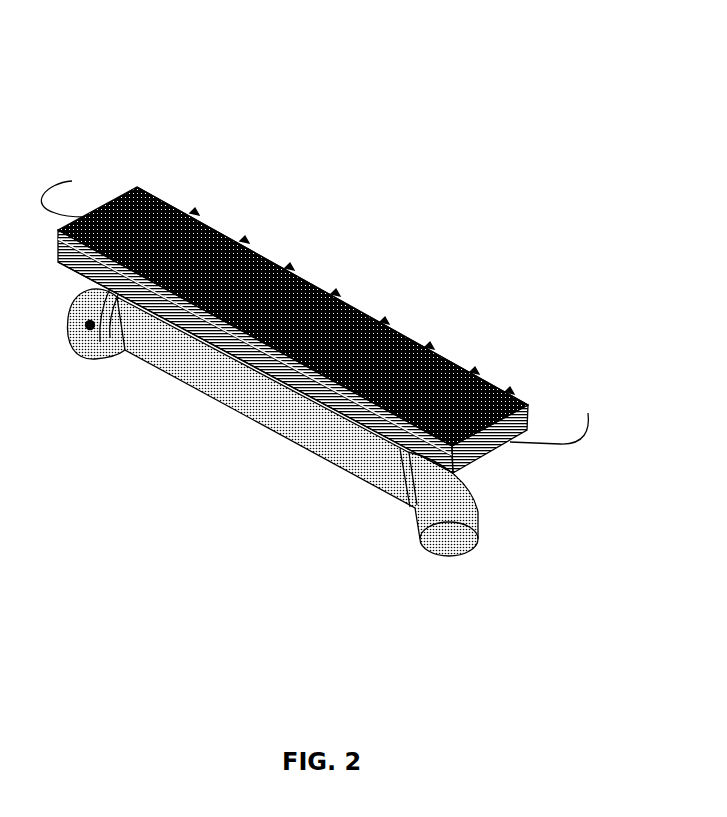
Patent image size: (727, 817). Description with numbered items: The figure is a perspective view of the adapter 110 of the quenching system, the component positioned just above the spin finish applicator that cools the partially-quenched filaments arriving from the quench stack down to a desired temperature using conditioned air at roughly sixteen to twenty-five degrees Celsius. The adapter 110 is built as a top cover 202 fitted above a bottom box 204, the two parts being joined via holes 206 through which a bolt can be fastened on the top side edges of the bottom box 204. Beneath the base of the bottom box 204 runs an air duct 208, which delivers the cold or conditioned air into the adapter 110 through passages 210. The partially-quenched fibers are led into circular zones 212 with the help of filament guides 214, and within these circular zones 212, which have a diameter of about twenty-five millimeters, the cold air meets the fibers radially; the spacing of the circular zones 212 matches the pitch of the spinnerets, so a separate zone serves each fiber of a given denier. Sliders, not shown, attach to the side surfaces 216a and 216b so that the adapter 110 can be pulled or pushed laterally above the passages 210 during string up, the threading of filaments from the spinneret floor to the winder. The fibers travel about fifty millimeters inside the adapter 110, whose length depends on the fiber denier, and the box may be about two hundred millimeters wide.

The adapter 110 is at (325, 331).
The top cover 202 is at (237, 247).
The bottom box 204 is at (362, 415).
The holes 206 is at (333, 297).
The air duct 208 is at (453, 522).
The passages 210 is at (333, 417).
The circular zones 212 is at (365, 317).
The filament guides 214 is at (353, 307).
The side surface 216a is at (558, 418).
The side surface 216b is at (80, 190).